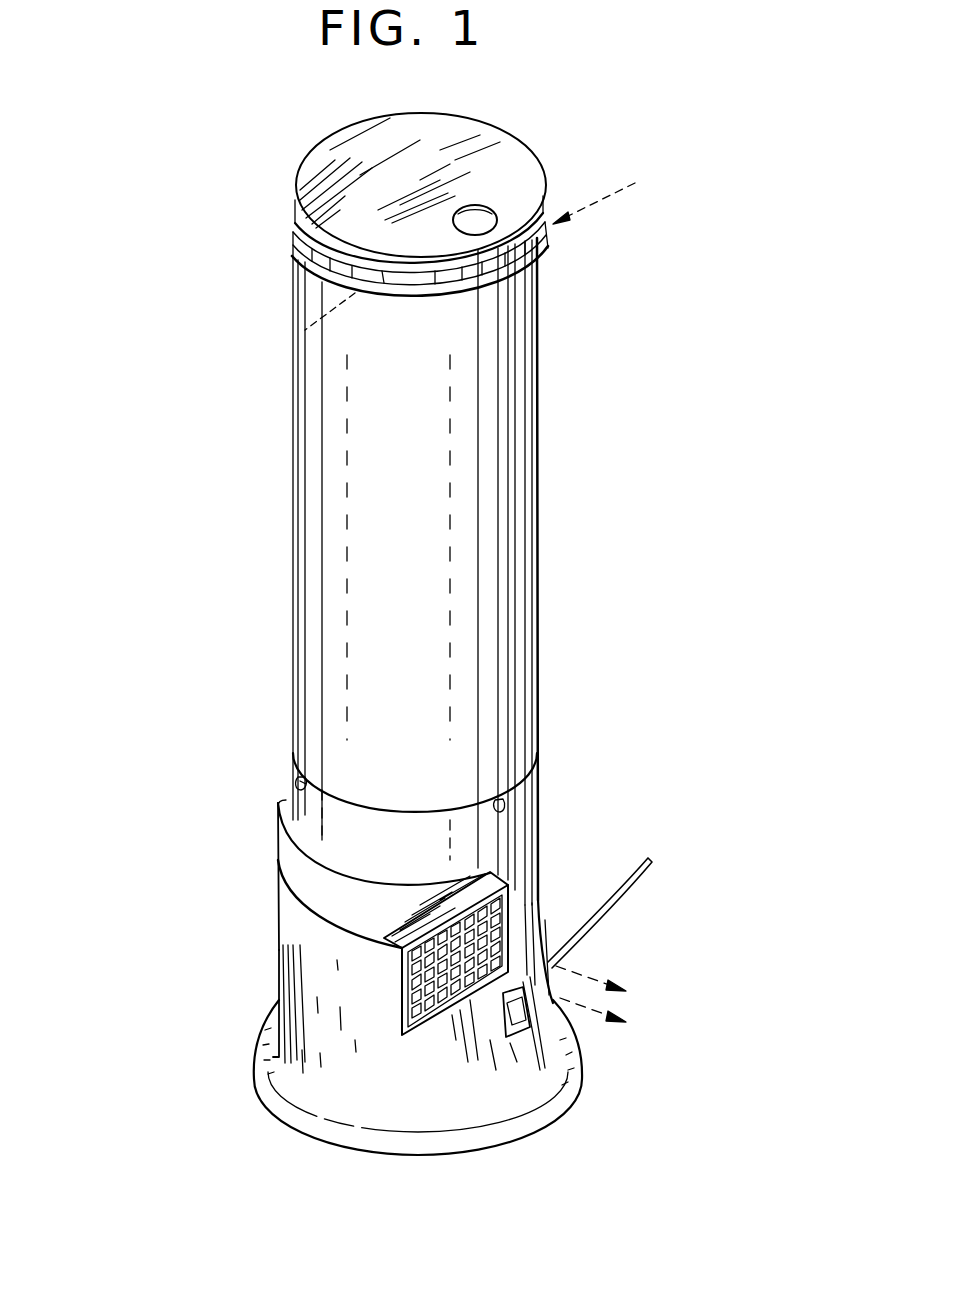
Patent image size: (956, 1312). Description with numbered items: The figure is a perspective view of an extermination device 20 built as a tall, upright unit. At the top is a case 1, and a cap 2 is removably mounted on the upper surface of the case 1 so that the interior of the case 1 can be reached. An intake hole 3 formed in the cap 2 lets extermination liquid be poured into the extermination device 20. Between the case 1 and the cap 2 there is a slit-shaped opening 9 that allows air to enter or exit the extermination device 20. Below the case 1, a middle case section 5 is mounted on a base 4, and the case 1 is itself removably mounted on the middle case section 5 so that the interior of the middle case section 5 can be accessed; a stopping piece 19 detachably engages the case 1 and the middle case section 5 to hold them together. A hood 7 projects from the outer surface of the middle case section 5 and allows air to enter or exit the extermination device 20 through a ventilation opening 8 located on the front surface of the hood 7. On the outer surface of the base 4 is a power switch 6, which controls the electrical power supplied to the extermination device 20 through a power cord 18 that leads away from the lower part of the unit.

The case 1 is at (523, 567).
The cap 2 is at (333, 178).
The intake hole 3 is at (482, 215).
The base 4 is at (372, 1103).
The middle case section 5 is at (474, 838).
The power switch 6 is at (535, 1025).
The hood 7 is at (328, 955).
The ventilation opening 8 is at (483, 973).
The slit-shaped opening 9 is at (505, 267).
The power cord 18 is at (620, 898).
The stopping piece 19 is at (294, 786).
The extermination device 20 is at (216, 442).